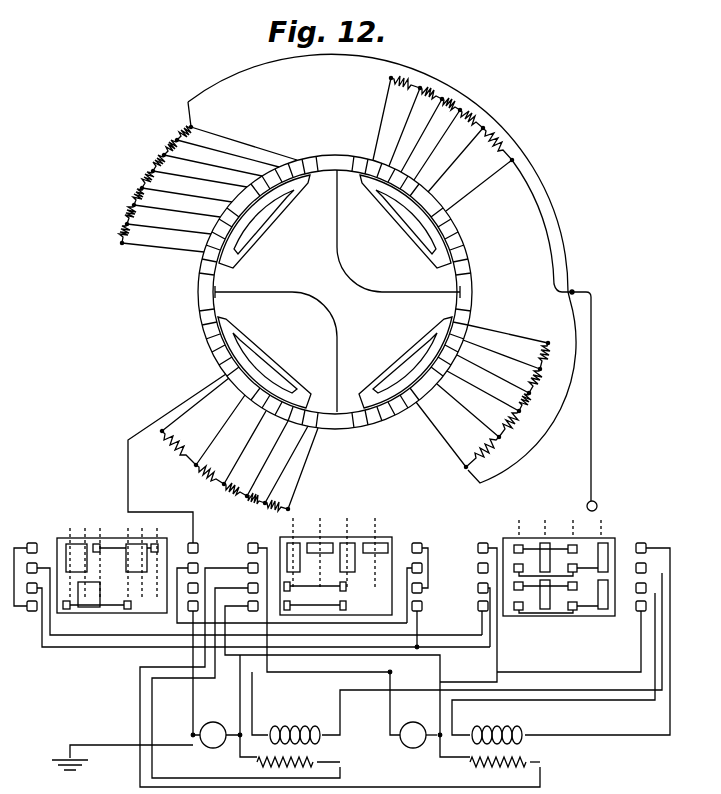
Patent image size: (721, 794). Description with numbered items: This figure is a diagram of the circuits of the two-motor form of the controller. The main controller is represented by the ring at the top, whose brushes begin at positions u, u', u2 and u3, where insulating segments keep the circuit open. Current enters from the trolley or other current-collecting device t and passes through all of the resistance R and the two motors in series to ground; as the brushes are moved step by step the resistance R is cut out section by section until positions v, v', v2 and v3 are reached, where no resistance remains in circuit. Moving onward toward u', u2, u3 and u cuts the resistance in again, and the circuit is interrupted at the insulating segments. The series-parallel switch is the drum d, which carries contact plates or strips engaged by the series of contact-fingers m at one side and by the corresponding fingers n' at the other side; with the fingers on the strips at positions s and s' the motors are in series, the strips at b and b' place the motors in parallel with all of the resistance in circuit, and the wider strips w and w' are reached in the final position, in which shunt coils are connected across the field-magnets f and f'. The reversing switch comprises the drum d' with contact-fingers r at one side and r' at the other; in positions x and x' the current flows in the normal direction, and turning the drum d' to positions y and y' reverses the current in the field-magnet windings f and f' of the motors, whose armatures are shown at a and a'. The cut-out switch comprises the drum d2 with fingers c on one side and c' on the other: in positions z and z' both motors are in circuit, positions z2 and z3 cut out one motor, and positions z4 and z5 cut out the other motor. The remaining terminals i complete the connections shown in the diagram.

The resistance R is at (355, 284).
The brush position u is at (395, 212).
The brush position u' is at (475, 294).
The brush position u2 is at (280, 369).
The brush position u3 is at (195, 290).
The brush position v is at (405, 221).
The brush position v' is at (405, 363).
The brush position v2 is at (264, 362).
The brush position v3 is at (264, 220).
The trolley or current-collecting device t is at (598, 497).
The contact-fingers c' is at (26, 567).
The contact-fingers c is at (197, 567).
The terminal column n' is at (251, 567).
The contact-fingers m is at (417, 585).
The contact-fingers r' is at (445, 654).
The terminal column i is at (641, 567).
The drum d is at (336, 558).
The drum d' is at (559, 572).
The drum d2 is at (112, 570).
The drum position z is at (140, 522).
The drum position z' is at (83, 522).
The drum position z2 is at (156, 521).
The drum position z3 is at (99, 521).
The drum position z4 is at (127, 521).
The drum position z5 is at (69, 521).
The switch contact b is at (347, 545).
The switch contact b' is at (294, 545).
The drum position s is at (375, 545).
The drum position s' is at (320, 545).
The contact-strip w is at (317, 600).
The contact-strip w' is at (315, 594).
The drum position x is at (600, 522).
The drum position x' is at (544, 522).
The drum position y is at (572, 522).
The drum position y' is at (517, 522).
The armature a is at (413, 724).
The armature a' is at (216, 724).
The field-magnet f is at (497, 724).
The field-magnet f' is at (295, 724).
The contact-fingers r is at (498, 772).